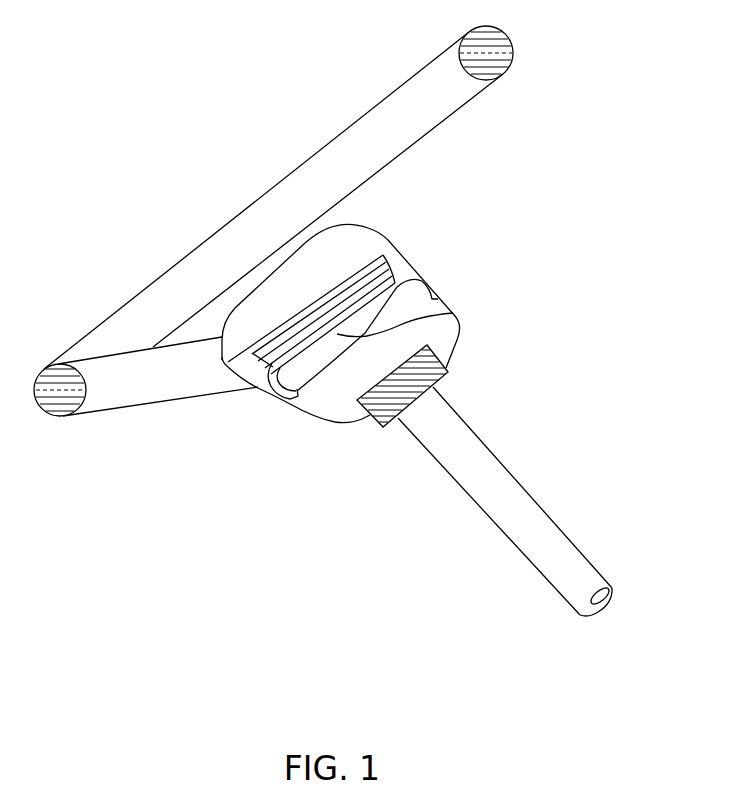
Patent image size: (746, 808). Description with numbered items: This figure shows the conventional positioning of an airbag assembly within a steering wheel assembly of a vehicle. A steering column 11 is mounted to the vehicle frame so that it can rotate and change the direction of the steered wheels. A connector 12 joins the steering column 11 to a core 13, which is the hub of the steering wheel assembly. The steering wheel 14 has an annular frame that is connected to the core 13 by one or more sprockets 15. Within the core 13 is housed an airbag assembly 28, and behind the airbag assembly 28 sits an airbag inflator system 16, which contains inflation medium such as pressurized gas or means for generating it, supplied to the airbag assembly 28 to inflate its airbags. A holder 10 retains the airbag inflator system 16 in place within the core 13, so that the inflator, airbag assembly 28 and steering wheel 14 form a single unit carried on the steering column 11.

The holder 10 is at (453, 313).
The steering column 11 is at (510, 507).
The connector 12 is at (422, 373).
The core 13 is at (343, 425).
The steering wheel 14 is at (218, 246).
The sprocket 15 is at (138, 386).
The airbag inflator system 16 is at (388, 261).
The airbag assembly 28 is at (347, 240).